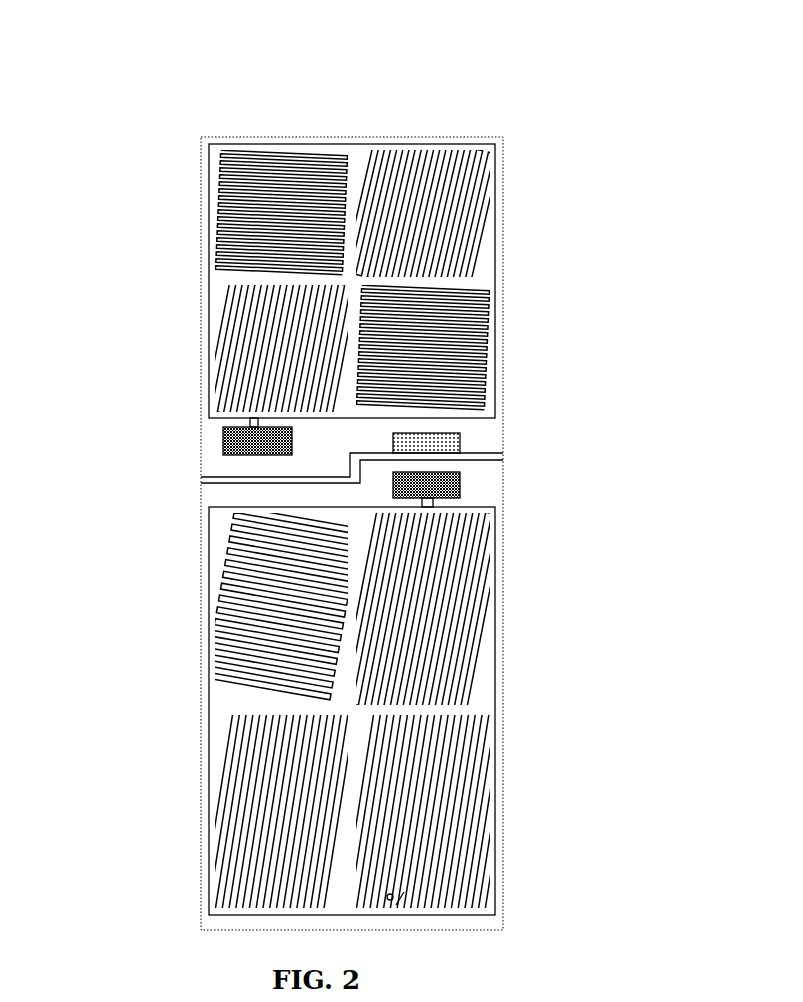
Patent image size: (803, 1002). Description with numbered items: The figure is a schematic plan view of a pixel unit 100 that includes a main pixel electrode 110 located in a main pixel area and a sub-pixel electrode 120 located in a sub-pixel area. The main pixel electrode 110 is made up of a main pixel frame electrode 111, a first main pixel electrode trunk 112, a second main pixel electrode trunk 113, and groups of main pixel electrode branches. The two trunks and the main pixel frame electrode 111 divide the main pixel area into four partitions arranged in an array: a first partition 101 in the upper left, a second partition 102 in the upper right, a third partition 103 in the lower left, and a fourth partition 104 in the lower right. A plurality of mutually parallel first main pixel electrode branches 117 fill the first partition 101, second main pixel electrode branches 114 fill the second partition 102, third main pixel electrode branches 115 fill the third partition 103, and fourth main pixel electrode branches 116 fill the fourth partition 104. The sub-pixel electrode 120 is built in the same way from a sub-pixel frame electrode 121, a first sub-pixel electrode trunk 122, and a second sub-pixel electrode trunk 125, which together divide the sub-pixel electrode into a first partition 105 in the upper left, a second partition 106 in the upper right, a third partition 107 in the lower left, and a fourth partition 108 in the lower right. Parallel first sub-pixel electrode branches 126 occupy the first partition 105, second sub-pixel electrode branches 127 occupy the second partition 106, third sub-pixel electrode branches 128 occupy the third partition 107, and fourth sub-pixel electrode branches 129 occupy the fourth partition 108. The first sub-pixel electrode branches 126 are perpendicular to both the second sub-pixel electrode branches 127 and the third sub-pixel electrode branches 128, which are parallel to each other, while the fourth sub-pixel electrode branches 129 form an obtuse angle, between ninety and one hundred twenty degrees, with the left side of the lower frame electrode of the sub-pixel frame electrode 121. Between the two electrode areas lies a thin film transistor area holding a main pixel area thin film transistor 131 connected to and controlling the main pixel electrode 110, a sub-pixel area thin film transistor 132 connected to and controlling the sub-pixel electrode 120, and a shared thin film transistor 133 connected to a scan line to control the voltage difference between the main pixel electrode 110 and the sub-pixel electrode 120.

The pixel unit 100 is at (82, 48).
The main pixel electrode 110 is at (409, 262).
The sub-pixel electrode 120 is at (392, 711).
The first partition 101 is at (209, 212).
The second partition 102 is at (494, 201).
The third partition 103 is at (217, 348).
The fourth partition 104 is at (489, 347).
The first partition 105 is at (223, 602).
The second partition 106 is at (478, 609).
The third partition 107 is at (225, 810).
The fourth partition 108 is at (477, 812).
The main pixel frame electrode 111 is at (455, 148).
The first main pixel electrode trunk 112 is at (480, 274).
The second main pixel electrode trunk 113 is at (352, 330).
The second main pixel electrode branches 114 is at (475, 175).
The third main pixel electrode branches 115 is at (228, 397).
The fourth main pixel electrode branches 116 is at (430, 385).
The first main pixel electrode branches 117 is at (250, 190).
The sub-pixel frame electrode 121 is at (487, 510).
The first sub-pixel electrode trunk 122 is at (485, 690).
The second sub-pixel electrode trunk 125 is at (355, 683).
The first sub-pixel electrode branches 126 is at (270, 603).
The second sub-pixel electrode branches 127 is at (465, 630).
The third sub-pixel electrode branches 128 is at (262, 778).
The fourth sub-pixel electrode branches 129 is at (478, 870).
The main pixel area thin film transistor 131 is at (222, 439).
The sub-pixel area thin film transistor 132 is at (455, 475).
The shared thin film transistor 133 is at (450, 440).